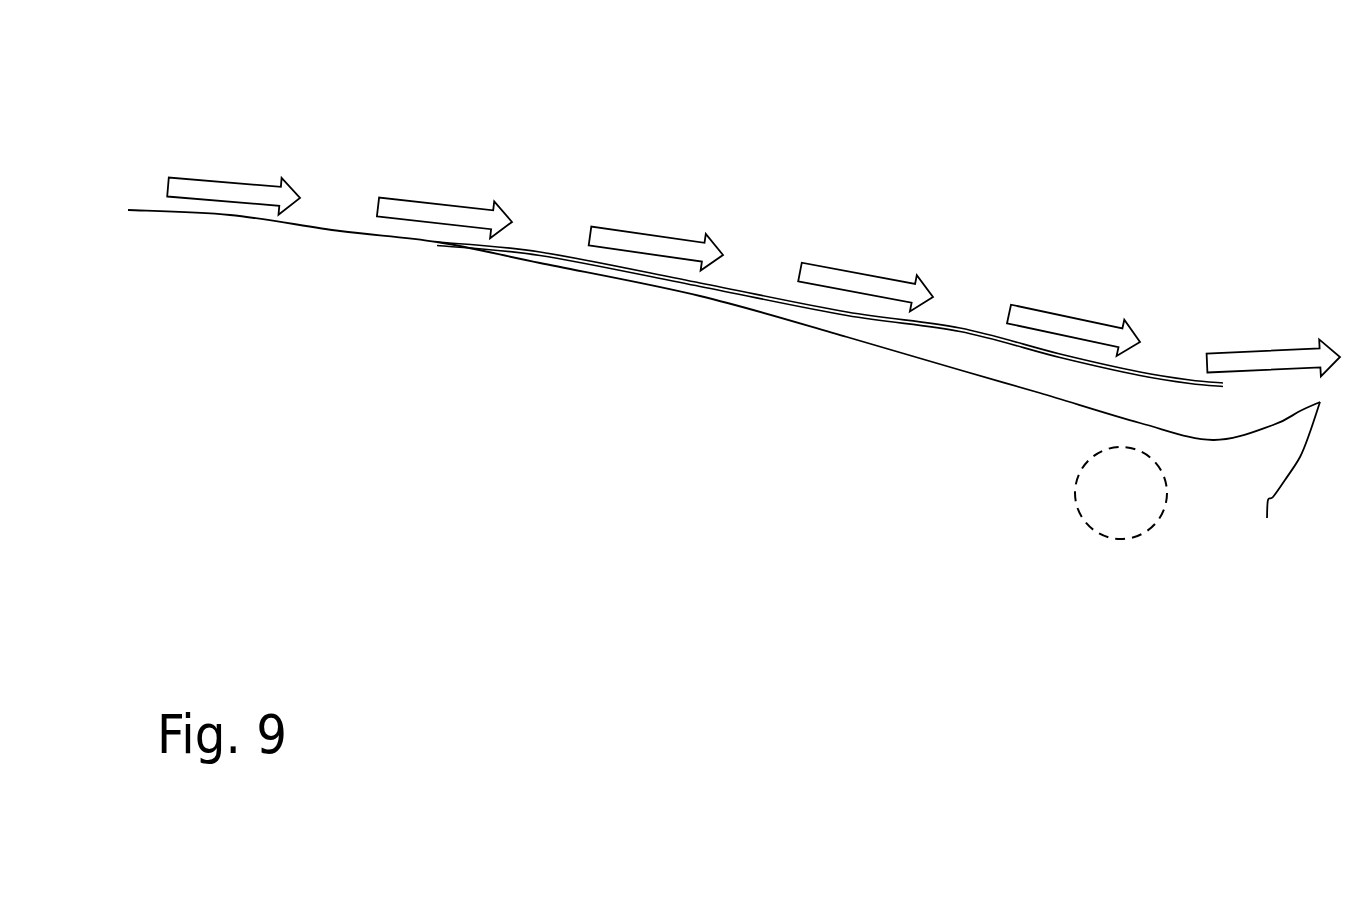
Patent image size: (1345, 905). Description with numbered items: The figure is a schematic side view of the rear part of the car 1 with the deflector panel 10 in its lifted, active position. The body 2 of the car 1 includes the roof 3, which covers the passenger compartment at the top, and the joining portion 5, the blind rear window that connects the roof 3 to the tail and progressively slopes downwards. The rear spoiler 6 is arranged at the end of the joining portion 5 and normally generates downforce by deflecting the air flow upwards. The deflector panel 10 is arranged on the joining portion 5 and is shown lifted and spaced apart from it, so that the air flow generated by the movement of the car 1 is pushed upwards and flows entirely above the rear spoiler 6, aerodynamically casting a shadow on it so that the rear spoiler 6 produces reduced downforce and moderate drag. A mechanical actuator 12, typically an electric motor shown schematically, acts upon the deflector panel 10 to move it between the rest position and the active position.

The car 1 is at (1193, 705).
The body 2 is at (982, 58).
The roof 3 is at (143, 208).
The joining portion 5 is at (847, 338).
The rear spoiler 6 is at (1285, 435).
The deflector panel 10 is at (967, 330).
The mechanical actuator 12 is at (1121, 493).